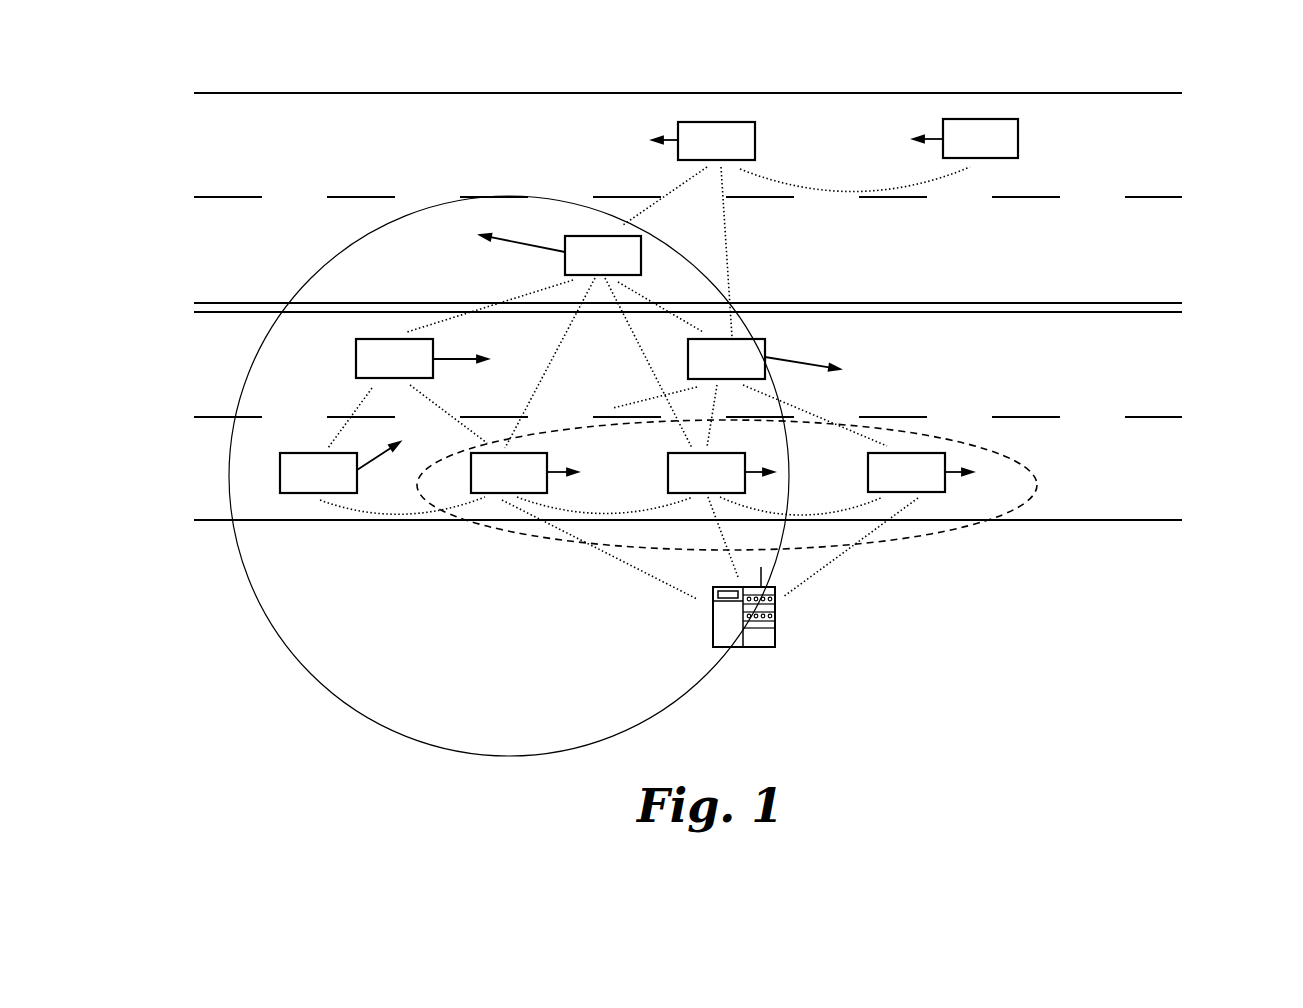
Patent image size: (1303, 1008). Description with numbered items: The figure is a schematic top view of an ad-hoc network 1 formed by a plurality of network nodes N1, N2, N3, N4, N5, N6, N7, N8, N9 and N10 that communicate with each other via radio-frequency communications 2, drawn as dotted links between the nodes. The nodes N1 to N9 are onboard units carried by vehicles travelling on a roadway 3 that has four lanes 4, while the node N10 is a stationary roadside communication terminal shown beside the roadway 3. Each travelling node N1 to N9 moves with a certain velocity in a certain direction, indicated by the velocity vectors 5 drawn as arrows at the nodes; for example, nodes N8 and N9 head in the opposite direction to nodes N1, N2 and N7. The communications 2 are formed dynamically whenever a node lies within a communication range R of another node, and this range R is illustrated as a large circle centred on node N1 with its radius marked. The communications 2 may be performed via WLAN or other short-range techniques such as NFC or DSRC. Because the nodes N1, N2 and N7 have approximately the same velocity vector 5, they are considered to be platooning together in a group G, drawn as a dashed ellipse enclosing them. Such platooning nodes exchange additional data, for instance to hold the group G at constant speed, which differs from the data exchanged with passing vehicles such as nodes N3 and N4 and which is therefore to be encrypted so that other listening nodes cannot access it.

The ad-hoc network 1 is at (184, 618).
The radio-frequency communications 2 is at (885, 190).
The roadway 3 is at (1228, 92).
The lanes 4 is at (208, 153).
The velocity vectors 5 is at (455, 357).
The communication range R is at (497, 494).
The group G is at (942, 533).
The network node N1 is at (509, 473).
The network node N2 is at (706, 473).
The network node N3 is at (726, 359).
The network node N4 is at (394, 358).
The network node N5 is at (318, 473).
The network node N6 is at (603, 255).
The network node N7 is at (906, 472).
The network node N8 is at (716, 141).
The network node N9 is at (980, 138).
The network node N10 is at (727, 610).